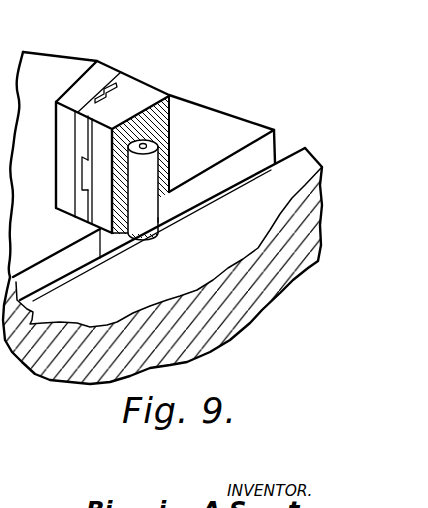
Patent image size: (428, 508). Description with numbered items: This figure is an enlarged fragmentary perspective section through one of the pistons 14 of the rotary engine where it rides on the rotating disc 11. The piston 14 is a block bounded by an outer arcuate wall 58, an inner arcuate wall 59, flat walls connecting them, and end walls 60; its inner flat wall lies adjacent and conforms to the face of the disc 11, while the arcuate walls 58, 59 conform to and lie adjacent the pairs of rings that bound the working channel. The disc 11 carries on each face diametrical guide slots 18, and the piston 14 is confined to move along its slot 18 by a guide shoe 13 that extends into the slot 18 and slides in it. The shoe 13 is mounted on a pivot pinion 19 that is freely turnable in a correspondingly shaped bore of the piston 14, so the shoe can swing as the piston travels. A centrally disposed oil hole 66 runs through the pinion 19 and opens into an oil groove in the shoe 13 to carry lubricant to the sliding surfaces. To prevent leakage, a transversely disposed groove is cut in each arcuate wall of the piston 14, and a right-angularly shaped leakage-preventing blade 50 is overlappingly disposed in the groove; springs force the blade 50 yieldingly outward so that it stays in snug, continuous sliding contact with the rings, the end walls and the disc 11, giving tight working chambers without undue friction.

The disc 11 is at (263, 302).
The guide shoe 13 is at (150, 218).
The piston 14 is at (143, 90).
The guide slot 18 is at (263, 148).
The pivot pinion 19 is at (158, 218).
The leakage-preventing blade 50 is at (120, 80).
The outer arcuate wall 58 is at (170, 117).
The inner arcuate wall 59 is at (100, 185).
The end wall 60 is at (70, 83).
The oil hole 66 is at (147, 146).